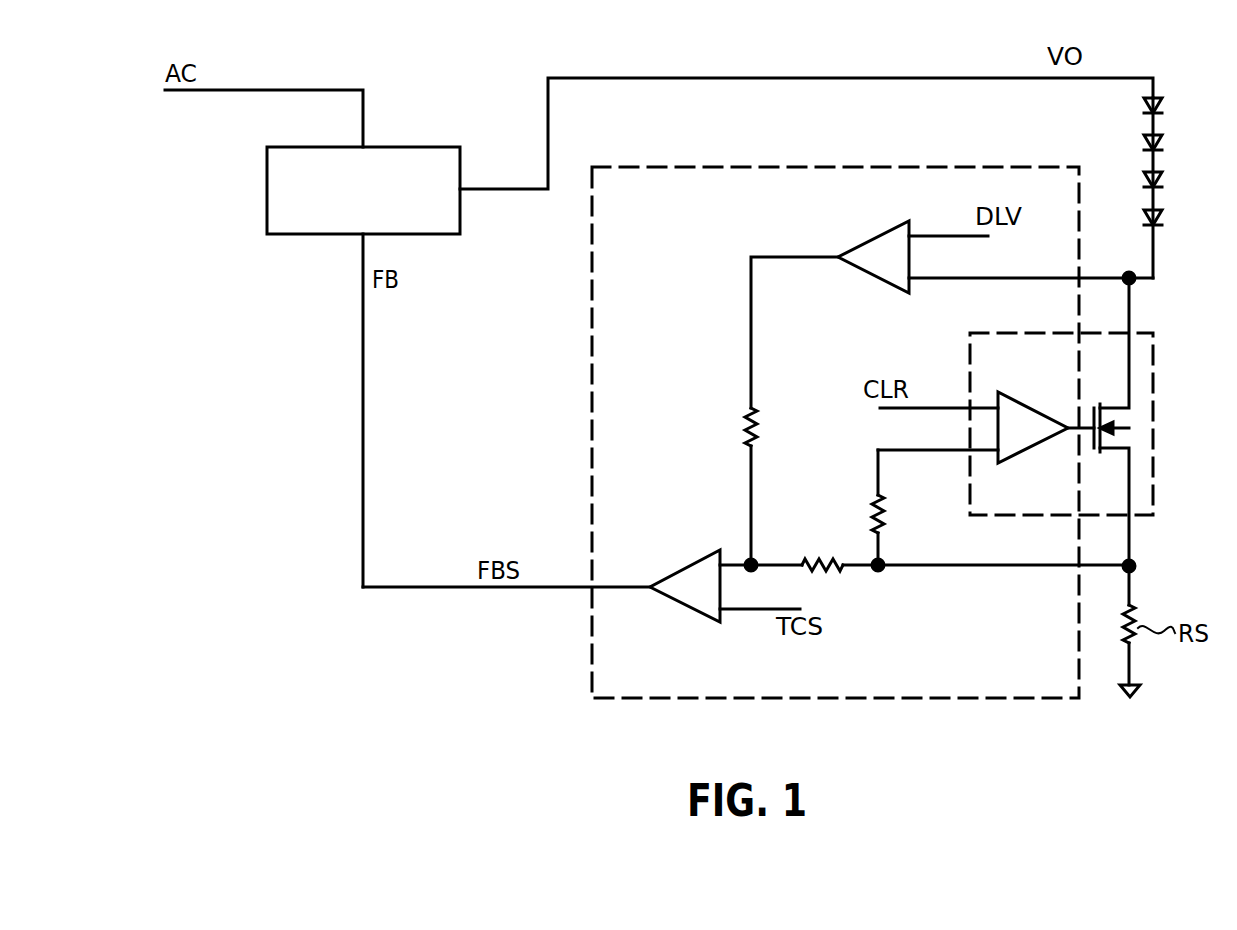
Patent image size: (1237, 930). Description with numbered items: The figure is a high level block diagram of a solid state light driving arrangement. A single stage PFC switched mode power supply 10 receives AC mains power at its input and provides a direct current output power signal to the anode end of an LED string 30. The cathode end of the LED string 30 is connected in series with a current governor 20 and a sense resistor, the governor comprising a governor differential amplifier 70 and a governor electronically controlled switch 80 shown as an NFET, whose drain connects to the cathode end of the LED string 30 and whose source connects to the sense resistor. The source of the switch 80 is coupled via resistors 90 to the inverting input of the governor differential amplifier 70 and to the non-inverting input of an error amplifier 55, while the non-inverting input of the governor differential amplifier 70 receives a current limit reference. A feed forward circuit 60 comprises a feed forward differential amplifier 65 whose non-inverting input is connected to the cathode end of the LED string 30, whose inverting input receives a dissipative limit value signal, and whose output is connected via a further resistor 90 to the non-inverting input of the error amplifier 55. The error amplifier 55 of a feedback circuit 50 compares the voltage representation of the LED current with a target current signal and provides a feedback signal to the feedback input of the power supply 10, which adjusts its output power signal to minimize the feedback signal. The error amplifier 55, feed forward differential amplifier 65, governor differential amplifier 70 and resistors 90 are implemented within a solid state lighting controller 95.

The single stage PFC switched mode power supply 10 is at (292, 236).
The current governor 20 is at (1155, 385).
The LED string 30 is at (1160, 182).
The feedback circuit 50 is at (550, 590).
The error amplifier 55 is at (677, 605).
The feed forward circuit 60 is at (751, 308).
The feed forward differential amplifier 65 is at (855, 265).
The governor differential amplifier 70 is at (1040, 408).
The governor electronically controlled switch 80 is at (1113, 398).
The resistors 90 is at (745, 447).
The solid state lighting controller 95 is at (590, 447).